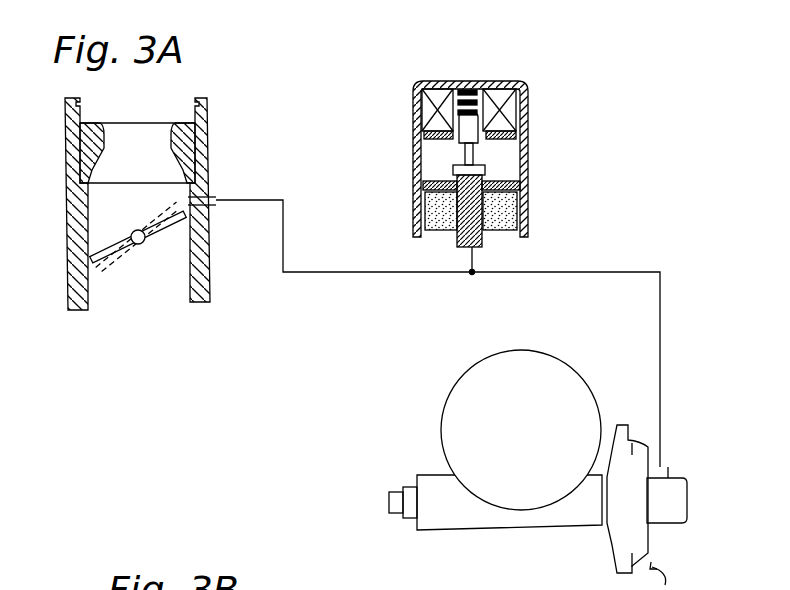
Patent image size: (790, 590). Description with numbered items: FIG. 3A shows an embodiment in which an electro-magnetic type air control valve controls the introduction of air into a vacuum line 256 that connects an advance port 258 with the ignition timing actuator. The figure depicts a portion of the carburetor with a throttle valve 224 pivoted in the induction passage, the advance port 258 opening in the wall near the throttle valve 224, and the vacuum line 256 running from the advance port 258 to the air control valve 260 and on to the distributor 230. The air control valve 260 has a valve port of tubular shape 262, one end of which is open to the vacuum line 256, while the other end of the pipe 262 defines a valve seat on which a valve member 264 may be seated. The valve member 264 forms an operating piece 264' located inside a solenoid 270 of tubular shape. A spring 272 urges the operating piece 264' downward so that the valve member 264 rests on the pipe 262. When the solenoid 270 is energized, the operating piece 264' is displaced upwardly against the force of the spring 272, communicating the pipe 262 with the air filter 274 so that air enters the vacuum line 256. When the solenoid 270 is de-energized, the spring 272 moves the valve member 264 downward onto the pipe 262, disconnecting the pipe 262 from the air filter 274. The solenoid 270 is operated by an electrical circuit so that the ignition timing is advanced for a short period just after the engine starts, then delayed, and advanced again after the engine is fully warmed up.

The throttle valve flap 224 is at (100, 245).
The advance port 258 is at (213, 196).
The vacuum line 256 is at (543, 273).
The air control valve 260 is at (495, 62).
The solenoid 270 is at (427, 113).
The spring 272 is at (458, 99).
The operating piece 264' is at (528, 129).
The valve member 264 is at (519, 159).
The valve port of tubular shape 262 is at (455, 247).
The air filter 274 is at (508, 211).
The motor / pump assembly 230 is at (531, 541).